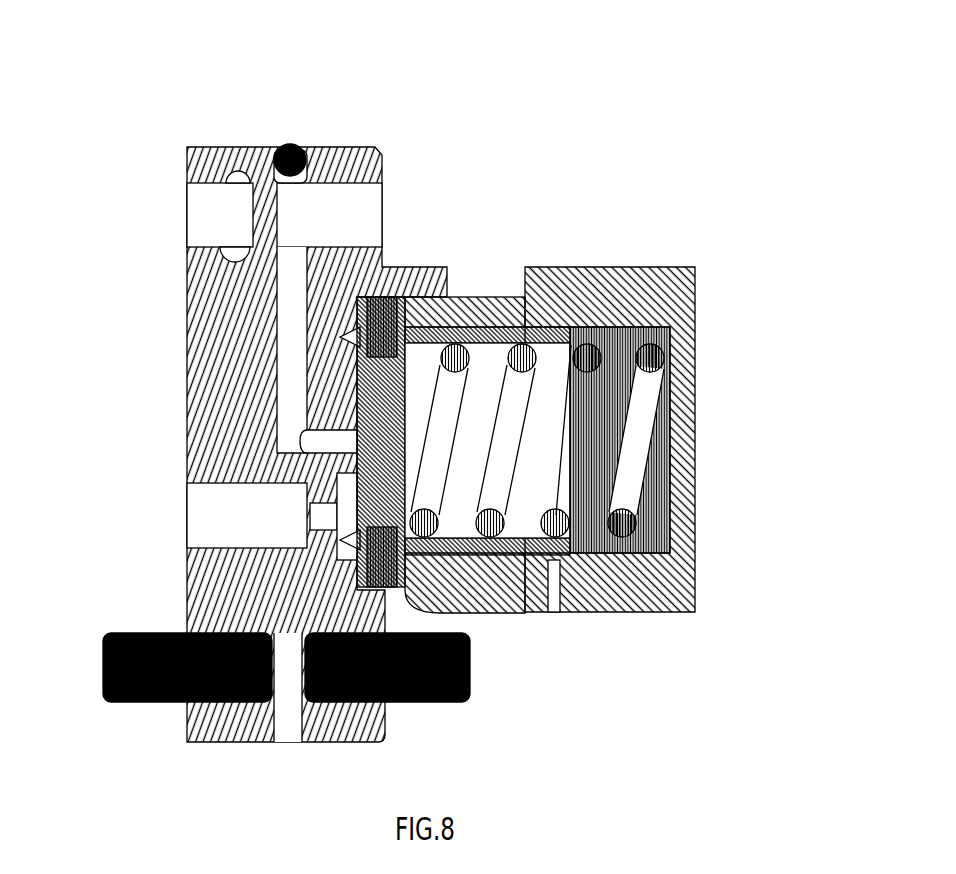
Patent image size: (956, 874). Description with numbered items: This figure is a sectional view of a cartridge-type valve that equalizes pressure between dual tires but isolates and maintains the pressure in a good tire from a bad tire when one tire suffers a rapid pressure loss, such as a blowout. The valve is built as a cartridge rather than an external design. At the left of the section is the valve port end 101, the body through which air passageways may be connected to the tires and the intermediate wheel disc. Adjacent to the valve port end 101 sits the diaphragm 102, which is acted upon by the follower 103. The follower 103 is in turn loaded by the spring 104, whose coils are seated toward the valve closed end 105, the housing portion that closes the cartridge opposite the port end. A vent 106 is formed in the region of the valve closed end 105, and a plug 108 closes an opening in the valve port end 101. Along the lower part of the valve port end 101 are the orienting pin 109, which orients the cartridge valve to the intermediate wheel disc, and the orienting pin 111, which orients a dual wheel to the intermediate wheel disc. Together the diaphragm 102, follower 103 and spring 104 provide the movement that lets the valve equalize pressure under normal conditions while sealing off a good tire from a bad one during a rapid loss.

The valve port end 101 is at (213, 147).
The diaphragm 102 is at (385, 263).
The follower 103 is at (457, 270).
The spring 104 is at (600, 330).
The valve closed end 105 is at (593, 267).
The vent 106 is at (548, 610).
The plug 108 is at (297, 147).
The orienting pin 109 is at (473, 677).
The orienting pin 111 is at (160, 633).